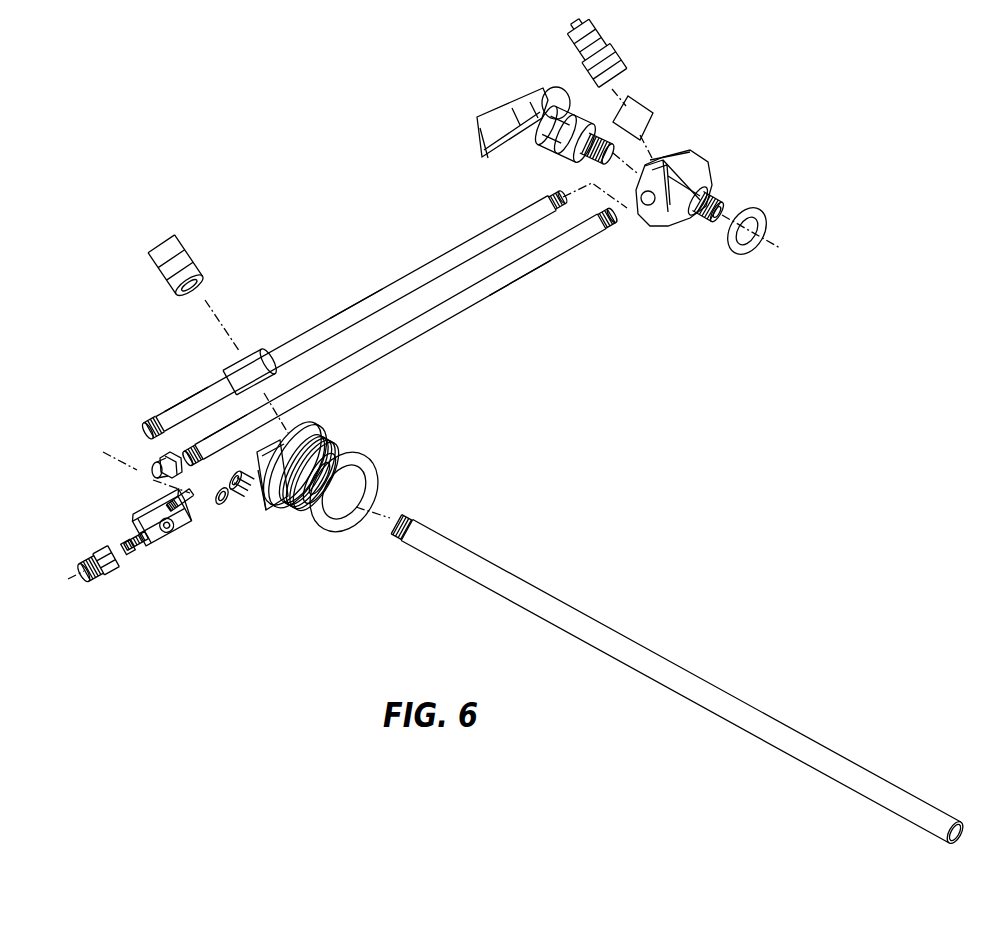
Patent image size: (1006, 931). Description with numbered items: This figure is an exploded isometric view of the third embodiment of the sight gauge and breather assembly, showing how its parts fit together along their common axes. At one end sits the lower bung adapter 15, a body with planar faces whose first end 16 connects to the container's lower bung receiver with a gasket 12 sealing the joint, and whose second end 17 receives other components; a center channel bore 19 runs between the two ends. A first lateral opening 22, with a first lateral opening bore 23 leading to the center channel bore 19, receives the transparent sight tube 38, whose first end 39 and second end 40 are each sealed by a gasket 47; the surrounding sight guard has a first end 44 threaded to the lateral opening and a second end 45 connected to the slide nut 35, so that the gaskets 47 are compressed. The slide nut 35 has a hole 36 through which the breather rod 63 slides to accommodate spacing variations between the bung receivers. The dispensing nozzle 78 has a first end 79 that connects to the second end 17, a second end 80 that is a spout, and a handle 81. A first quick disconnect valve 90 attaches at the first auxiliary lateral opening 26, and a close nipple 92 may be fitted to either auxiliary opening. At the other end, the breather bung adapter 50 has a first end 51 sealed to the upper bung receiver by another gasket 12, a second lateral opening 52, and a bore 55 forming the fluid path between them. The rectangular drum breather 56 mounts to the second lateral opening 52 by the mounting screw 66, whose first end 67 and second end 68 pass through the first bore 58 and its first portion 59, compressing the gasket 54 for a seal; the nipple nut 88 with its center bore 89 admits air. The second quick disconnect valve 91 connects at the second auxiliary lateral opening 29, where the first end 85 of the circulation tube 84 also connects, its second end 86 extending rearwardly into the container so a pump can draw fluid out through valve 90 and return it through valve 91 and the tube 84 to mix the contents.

The gasket 12 is at (746, 253).
The lower bung adapter 15 is at (690, 178).
The first end 16 is at (720, 203).
The second end 17 is at (660, 160).
The center channel bore 19 is at (713, 223).
The first lateral opening 22 is at (660, 218).
The first lateral opening bore 23 is at (647, 207).
The first auxiliary lateral opening 26 is at (675, 172).
The second auxiliary lateral opening 29 is at (258, 470).
The slide nut 35 is at (152, 465).
The hole 36 is at (160, 462).
The sight tube 38 is at (347, 313).
The first end 39 is at (530, 273).
The second end 40 is at (218, 441).
The first end 44 is at (462, 247).
The second end 45 is at (178, 403).
The gasket 47 is at (610, 228).
The breather bung adapter 50 is at (305, 428).
The first end 51 is at (300, 500).
The second lateral opening 52 is at (244, 498).
The gasket 54 is at (220, 505).
The bore 55 is at (307, 497).
The drum breather 56 is at (142, 510).
The first bore 58 is at (162, 533).
The first portion 59 is at (147, 522).
The breather rod 63 is at (170, 497).
The mounting screw 66 is at (140, 550).
The first end 67 is at (127, 546).
The second end 68 is at (158, 538).
The dispensing nozzle 78 is at (547, 145).
The first end 79 is at (590, 149).
The second end 80 is at (562, 100).
The handle 81 is at (512, 104).
The circulation tube 84 is at (652, 668).
The first end 85 is at (428, 546).
The second end 86 is at (938, 818).
The nipple nut 88 is at (100, 583).
The center bore 89 is at (88, 568).
The first quick disconnect valve 90 is at (598, 31).
The second quick disconnect valve 91 is at (168, 241).
The close nipple 92 is at (248, 368).